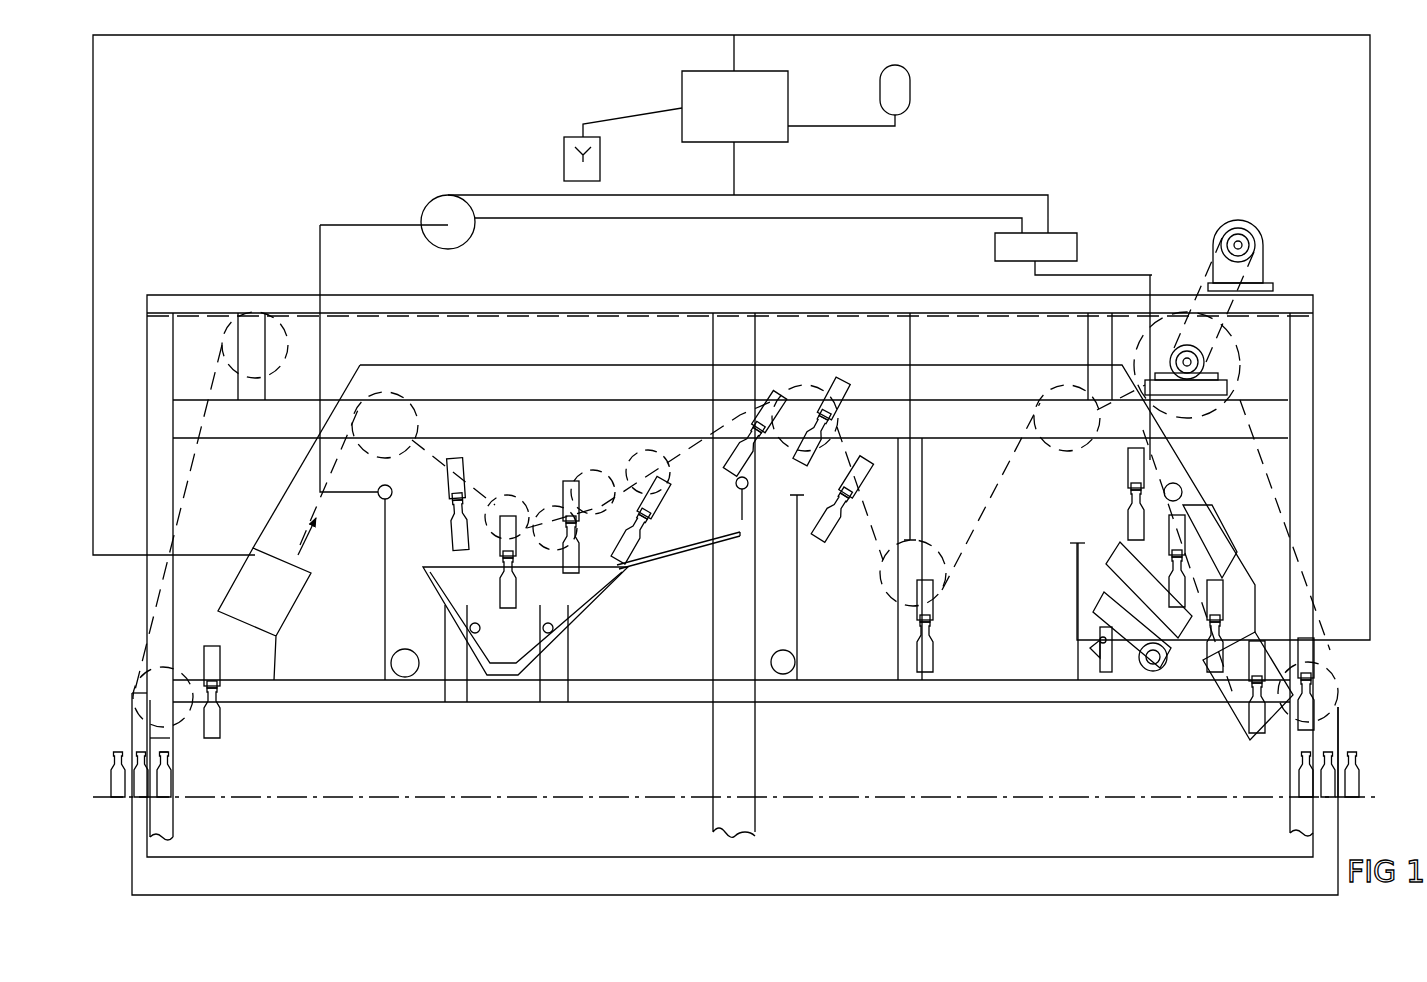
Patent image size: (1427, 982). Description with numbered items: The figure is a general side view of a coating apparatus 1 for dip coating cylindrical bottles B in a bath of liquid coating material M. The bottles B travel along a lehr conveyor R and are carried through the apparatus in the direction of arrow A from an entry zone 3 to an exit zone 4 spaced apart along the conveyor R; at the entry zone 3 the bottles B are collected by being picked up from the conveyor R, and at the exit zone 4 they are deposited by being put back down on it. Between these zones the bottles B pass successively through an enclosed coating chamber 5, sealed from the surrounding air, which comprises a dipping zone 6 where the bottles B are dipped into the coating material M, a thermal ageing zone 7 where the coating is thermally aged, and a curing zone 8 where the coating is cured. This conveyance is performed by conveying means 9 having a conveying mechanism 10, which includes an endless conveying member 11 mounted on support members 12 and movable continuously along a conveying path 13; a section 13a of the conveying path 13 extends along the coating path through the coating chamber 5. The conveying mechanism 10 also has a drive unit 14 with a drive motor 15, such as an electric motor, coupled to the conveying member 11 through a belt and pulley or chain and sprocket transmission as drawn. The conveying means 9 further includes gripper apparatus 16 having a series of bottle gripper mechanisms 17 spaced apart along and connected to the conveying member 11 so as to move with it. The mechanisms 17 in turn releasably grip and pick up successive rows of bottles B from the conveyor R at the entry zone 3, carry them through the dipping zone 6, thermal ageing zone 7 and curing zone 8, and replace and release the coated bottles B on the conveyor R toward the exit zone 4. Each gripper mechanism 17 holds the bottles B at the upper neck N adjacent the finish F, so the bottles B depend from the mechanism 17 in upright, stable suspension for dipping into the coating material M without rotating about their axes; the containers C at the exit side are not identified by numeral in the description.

The coating apparatus 1 is at (1318, 20).
The entry zone 3 is at (95, 762).
The exit zone 4 is at (1365, 735).
The coating chamber 5 is at (587, 650).
The dipping zone 6 is at (425, 545).
The thermal ageing zone 7 is at (882, 655).
The curing zone 8 is at (1187, 665).
The conveying means 9 is at (212, 340).
The conveying mechanism 10 is at (190, 486).
The endless conveying member 11 is at (165, 582).
The support members 12 is at (282, 345).
The conveying path 13 is at (195, 432).
The section of conveying path 13a is at (276, 646).
The drive unit 14 is at (1190, 250).
The drive motor 15 is at (1255, 268).
The gripper apparatus 16 is at (122, 705).
The bottle gripper mechanisms 17 is at (205, 652).
The arrow A is at (316, 540).
The bottles B is at (178, 780).
The filled containers C is at (1362, 785).
The finish F is at (155, 738).
The coating material M is at (540, 600).
The upper neck N is at (180, 752).
The lehr conveyor R is at (448, 792).